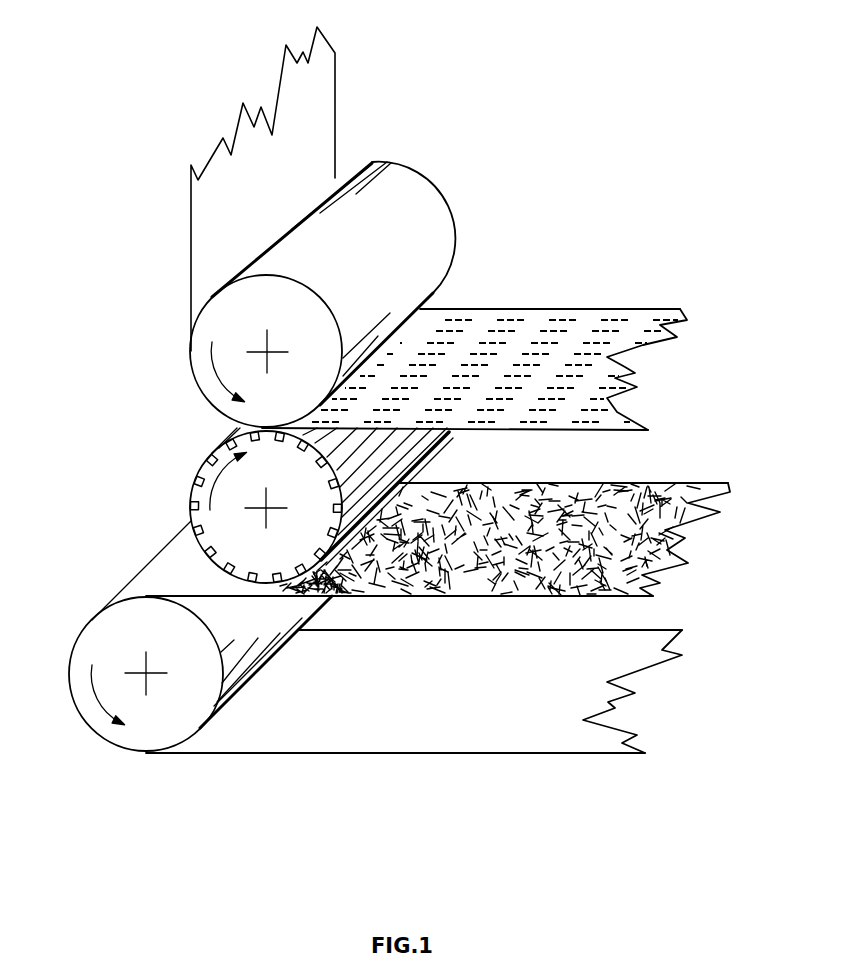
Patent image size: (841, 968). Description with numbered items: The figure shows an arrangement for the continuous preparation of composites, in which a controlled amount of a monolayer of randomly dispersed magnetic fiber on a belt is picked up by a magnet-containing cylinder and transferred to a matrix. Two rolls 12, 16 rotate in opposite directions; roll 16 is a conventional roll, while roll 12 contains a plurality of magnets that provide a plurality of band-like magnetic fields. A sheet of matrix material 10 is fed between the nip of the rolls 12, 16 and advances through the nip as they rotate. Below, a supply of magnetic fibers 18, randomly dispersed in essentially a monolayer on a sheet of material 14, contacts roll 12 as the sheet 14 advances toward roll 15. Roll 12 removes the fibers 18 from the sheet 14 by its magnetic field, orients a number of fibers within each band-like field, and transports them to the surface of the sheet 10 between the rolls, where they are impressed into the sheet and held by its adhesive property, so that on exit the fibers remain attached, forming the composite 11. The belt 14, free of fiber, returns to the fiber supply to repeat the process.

The sheet of matrix material 10 is at (180, 227).
The roll 16 is at (443, 168).
The composite 11 is at (595, 293).
The roll 12 is at (175, 505).
The magnetic fibers 18 is at (638, 474).
The roll 15 is at (82, 741).
The sheet of material 14 is at (378, 764).